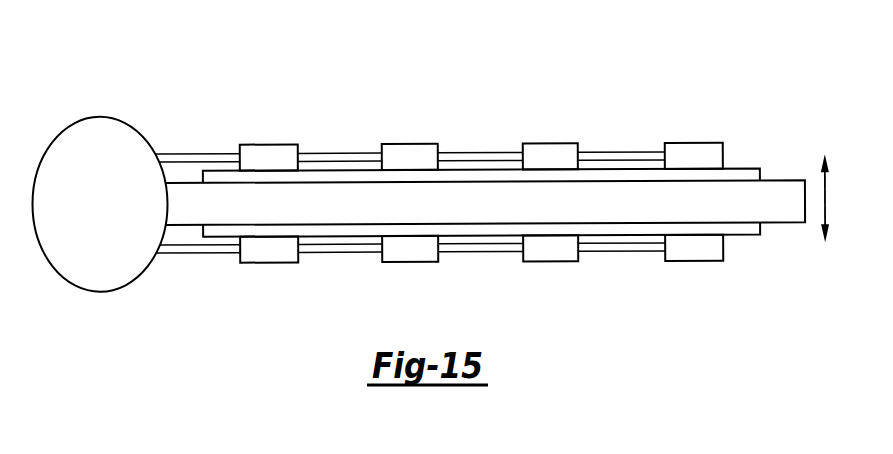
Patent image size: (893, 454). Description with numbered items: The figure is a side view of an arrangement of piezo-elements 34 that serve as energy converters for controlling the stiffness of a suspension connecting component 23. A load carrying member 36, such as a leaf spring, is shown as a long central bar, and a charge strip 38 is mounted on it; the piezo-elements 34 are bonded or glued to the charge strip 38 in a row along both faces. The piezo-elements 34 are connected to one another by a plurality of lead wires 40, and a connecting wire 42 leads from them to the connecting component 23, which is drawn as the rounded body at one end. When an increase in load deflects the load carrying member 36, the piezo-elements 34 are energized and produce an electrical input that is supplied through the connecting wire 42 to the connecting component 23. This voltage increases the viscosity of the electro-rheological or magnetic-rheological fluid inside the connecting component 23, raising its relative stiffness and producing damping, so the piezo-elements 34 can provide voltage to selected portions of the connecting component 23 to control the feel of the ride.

The connecting component 23 is at (50, 143).
The piezo-elements 34 is at (567, 157).
The load carrying member 36 is at (788, 198).
The charge strip 38 is at (740, 168).
The lead wires 40 is at (498, 152).
The connecting wire 42 is at (195, 152).